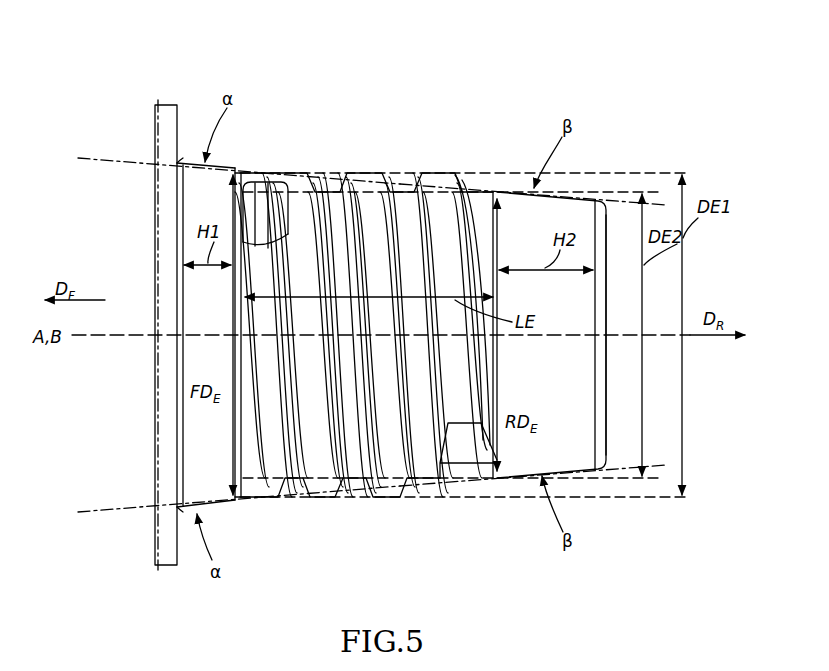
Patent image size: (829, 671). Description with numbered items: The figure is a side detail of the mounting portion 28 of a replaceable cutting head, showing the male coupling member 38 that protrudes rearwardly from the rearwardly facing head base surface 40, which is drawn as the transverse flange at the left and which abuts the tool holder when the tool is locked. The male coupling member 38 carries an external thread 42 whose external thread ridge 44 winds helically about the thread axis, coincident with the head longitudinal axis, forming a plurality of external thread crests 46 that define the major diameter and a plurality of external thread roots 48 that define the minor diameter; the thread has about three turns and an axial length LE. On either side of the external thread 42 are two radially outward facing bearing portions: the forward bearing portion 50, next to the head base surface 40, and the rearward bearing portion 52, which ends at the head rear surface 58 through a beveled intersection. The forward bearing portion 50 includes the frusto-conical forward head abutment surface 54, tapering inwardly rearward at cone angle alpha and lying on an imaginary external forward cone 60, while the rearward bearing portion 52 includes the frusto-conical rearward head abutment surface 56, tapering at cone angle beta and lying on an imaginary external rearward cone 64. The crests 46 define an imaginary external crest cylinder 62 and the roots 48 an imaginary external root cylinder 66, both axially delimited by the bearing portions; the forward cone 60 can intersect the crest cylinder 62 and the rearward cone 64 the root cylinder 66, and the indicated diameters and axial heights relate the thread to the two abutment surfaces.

The mounting portion 28 is at (507, 75).
The male coupling member 38 is at (322, 547).
The head base surface 40 is at (177, 127).
The external thread 42 is at (418, 550).
The external thread ridge 44 is at (363, 173).
The external thread crests 46 is at (388, 330).
The external thread roots 48 is at (327, 173).
The forward bearing portion 50 is at (232, 148).
The rearward bearing portion 52 is at (542, 190).
The forward head abutment surface 54 is at (202, 431).
The rearward head abutment surface 56 is at (568, 440).
The head rear surface 58 is at (620, 335).
The imaginary external forward cone 60 is at (118, 162).
The imaginary external crest cylinder 62 is at (527, 170).
The imaginary external rearward cone 64 is at (662, 200).
The imaginary external root cylinder 66 is at (452, 176).